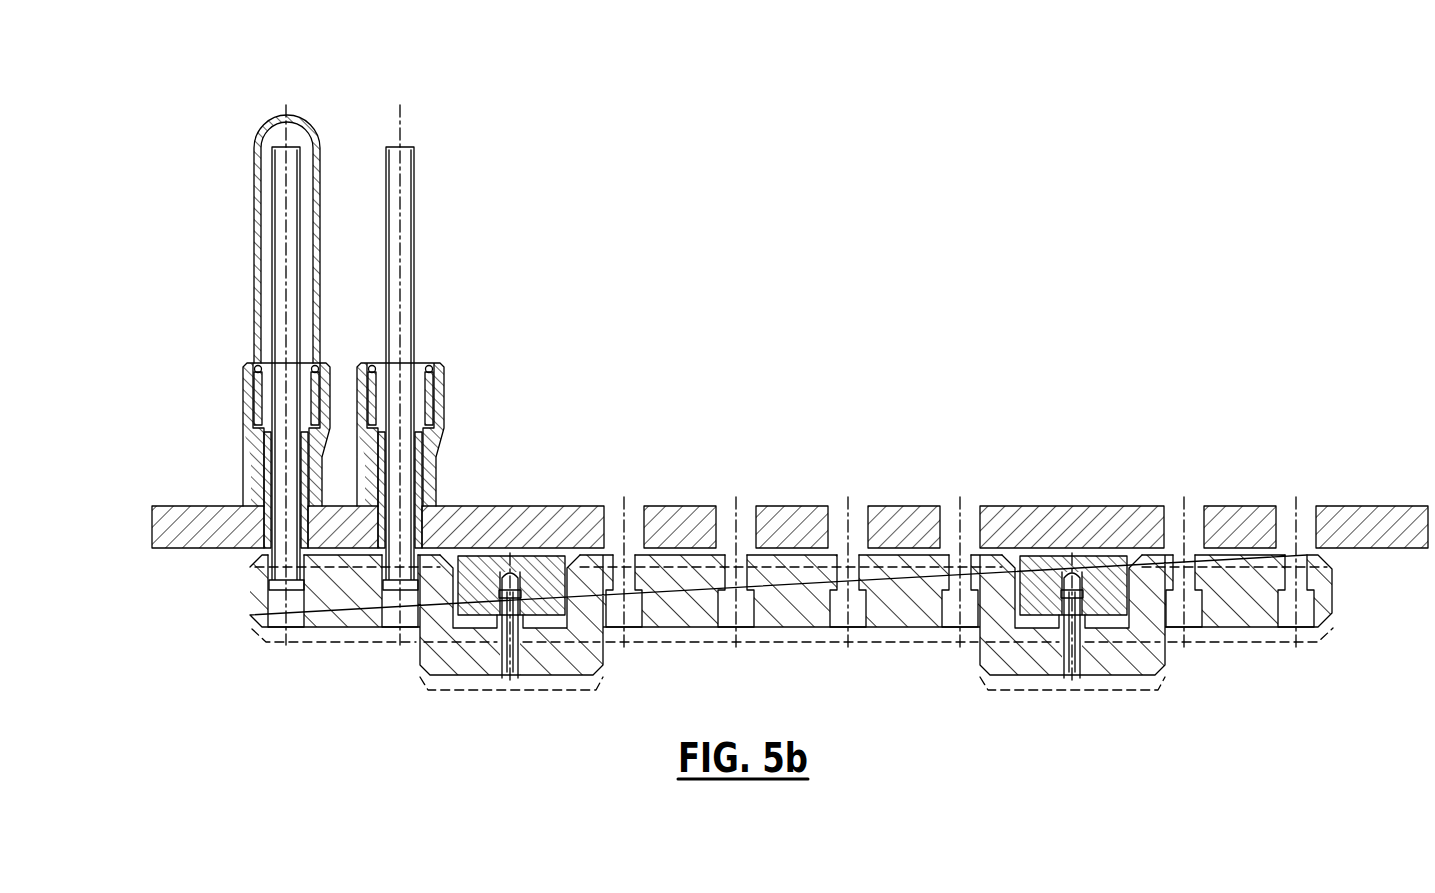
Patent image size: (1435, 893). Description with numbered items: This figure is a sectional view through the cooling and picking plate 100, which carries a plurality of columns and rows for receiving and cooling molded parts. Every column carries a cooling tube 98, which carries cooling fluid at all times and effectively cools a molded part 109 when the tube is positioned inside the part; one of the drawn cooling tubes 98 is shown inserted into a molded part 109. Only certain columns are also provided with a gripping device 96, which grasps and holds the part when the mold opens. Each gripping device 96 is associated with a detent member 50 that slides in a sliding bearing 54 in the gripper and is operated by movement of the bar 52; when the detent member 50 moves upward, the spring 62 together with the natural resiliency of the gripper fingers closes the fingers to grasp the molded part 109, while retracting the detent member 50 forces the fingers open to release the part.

The detent member 50 is at (250, 440).
The bar 52 is at (347, 603).
The sliding bearing 54 is at (452, 505).
The spring 62 is at (247, 448).
The gripping device 96 is at (243, 366).
The cooling tube 98 is at (280, 186).
The plate 100 is at (612, 505).
The molded part 109 is at (286, 112).